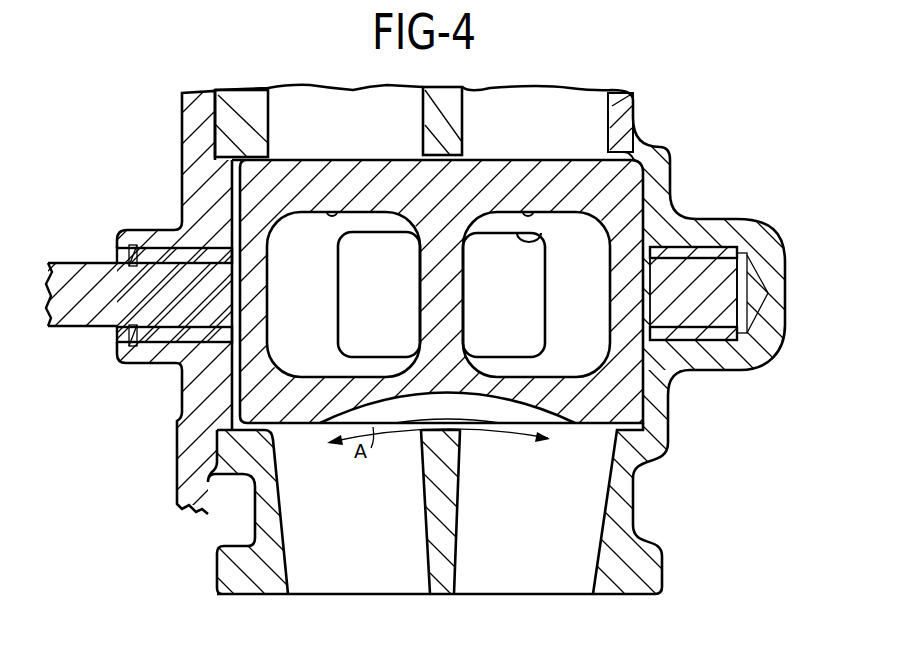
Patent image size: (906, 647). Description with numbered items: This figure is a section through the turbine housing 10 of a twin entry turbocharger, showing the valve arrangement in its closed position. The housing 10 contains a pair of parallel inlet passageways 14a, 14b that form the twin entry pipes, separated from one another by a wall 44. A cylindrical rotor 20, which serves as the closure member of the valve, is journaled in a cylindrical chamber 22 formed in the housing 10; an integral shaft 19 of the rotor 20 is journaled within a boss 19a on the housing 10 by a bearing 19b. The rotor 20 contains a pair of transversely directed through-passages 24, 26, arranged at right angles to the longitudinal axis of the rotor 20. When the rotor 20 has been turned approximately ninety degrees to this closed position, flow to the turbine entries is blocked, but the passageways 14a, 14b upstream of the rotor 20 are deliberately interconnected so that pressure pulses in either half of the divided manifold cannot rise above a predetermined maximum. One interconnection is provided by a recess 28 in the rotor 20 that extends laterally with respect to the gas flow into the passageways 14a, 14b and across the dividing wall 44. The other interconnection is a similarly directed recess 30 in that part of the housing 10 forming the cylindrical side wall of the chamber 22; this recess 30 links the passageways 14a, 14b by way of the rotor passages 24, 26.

The turbine housing 10 is at (633, 497).
The inlet passageway 14a is at (549, 541).
The inlet passageway 14b is at (373, 541).
The shaft 19 is at (703, 256).
The boss 19a is at (773, 253).
The bearing 19b is at (690, 252).
The cylindrical rotor 20 is at (613, 168).
The cylindrical chamber 22 is at (274, 437).
The through-passage 24 is at (529, 213).
The through-passage 26 is at (333, 214).
The recess 28 is at (517, 403).
The recess 30 is at (541, 240).
The wall 44 is at (448, 577).